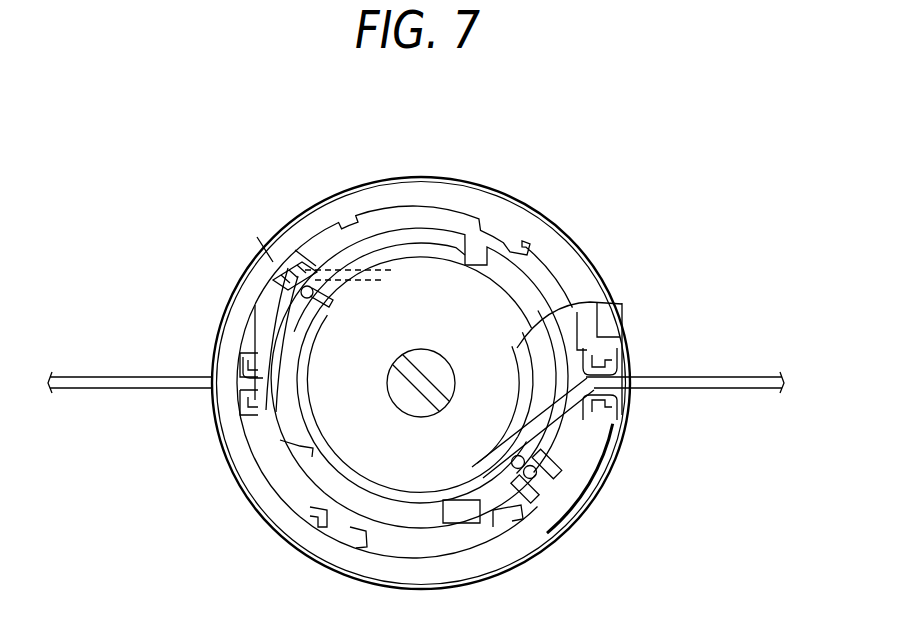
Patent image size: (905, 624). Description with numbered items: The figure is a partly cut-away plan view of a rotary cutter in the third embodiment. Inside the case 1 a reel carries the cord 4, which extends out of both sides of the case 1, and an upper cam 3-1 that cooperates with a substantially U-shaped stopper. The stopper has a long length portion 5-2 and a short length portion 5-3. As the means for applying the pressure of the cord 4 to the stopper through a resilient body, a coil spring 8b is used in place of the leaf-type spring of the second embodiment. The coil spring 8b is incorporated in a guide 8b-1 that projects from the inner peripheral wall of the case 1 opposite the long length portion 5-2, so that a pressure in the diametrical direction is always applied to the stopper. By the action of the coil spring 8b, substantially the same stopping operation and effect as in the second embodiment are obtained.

The case 1 is at (555, 219).
The upper cam 3-1 is at (383, 268).
The cord 4 is at (118, 390).
The long length portion 5-2 is at (330, 265).
The short length portion 5-3 is at (555, 500).
The coil spring 8b is at (282, 266).
The guide 8b-1 is at (265, 292).